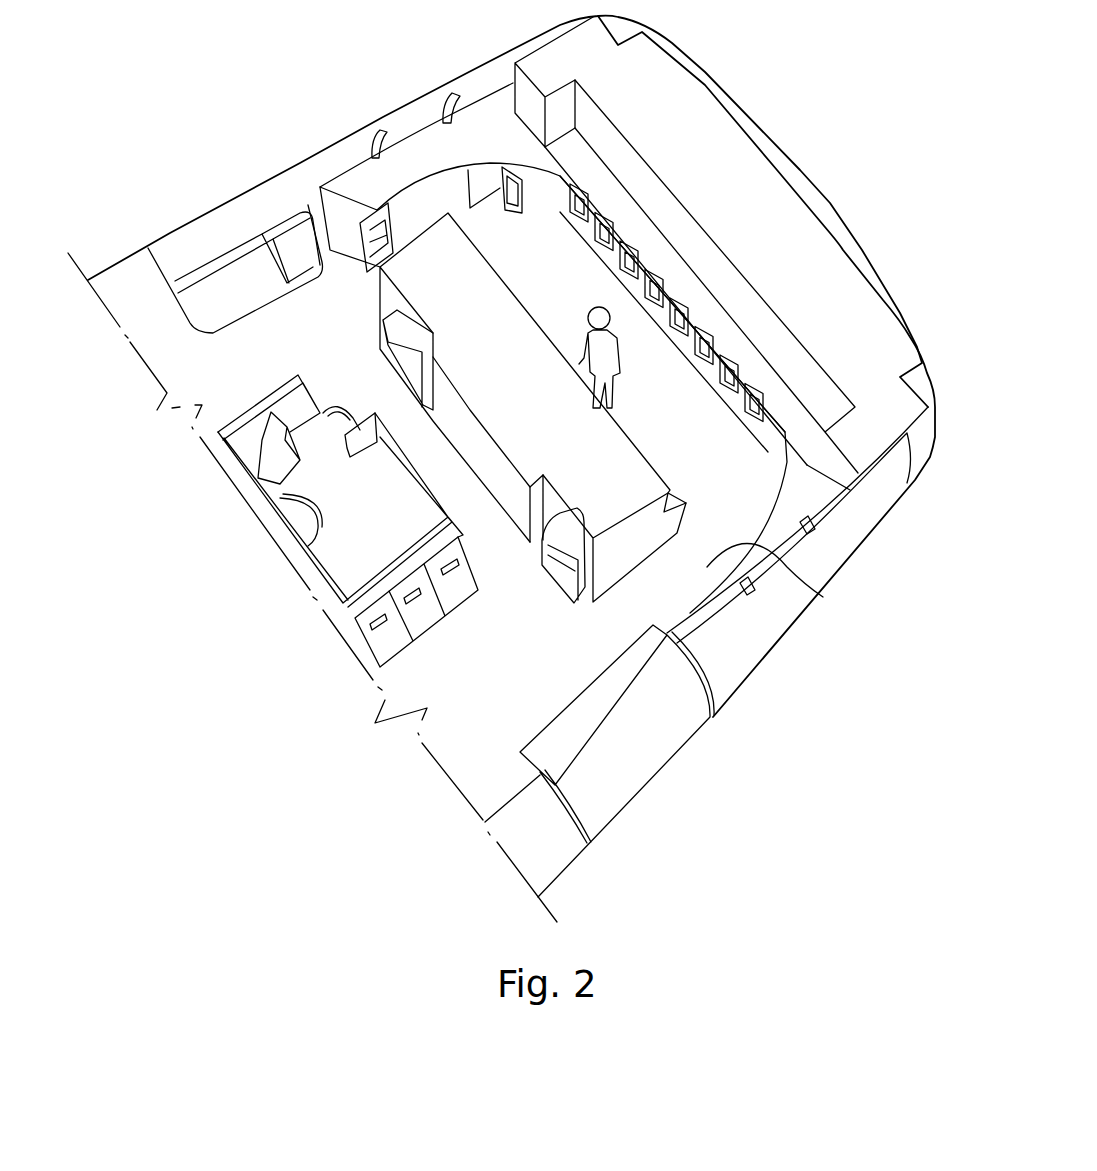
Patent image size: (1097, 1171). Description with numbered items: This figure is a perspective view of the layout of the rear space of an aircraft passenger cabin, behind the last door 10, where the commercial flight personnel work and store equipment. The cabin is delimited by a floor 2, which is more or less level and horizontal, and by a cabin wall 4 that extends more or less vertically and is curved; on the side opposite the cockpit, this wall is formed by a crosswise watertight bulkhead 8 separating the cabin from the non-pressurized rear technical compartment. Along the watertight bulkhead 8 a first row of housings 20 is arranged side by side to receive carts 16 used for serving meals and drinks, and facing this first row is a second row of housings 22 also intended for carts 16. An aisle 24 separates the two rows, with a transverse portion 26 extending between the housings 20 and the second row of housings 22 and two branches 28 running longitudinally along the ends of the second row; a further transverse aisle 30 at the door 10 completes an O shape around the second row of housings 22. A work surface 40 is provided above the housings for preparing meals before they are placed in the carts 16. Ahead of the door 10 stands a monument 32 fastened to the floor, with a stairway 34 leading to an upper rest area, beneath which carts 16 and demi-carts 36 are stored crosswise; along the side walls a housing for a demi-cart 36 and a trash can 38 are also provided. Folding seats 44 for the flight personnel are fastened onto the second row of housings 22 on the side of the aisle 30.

The floor 2 is at (483, 706).
The cabin wall 4 is at (763, 636).
The watertight bulkhead 8 is at (813, 181).
The last door 10 is at (242, 217).
The carts 16 is at (730, 406).
The housings 20 is at (627, 262).
The second row of housings 22 is at (643, 552).
The aisle 24 is at (733, 488).
The transverse portion 26 is at (703, 323).
The branches 28 is at (823, 597).
The transverse aisle 30 is at (468, 492).
The monument 32 is at (348, 556).
The stairway 34 is at (323, 413).
The demi-carts 36 is at (367, 276).
The trash can 38 is at (450, 195).
The work surface 40 is at (494, 112).
The folding seats 44 is at (407, 375).